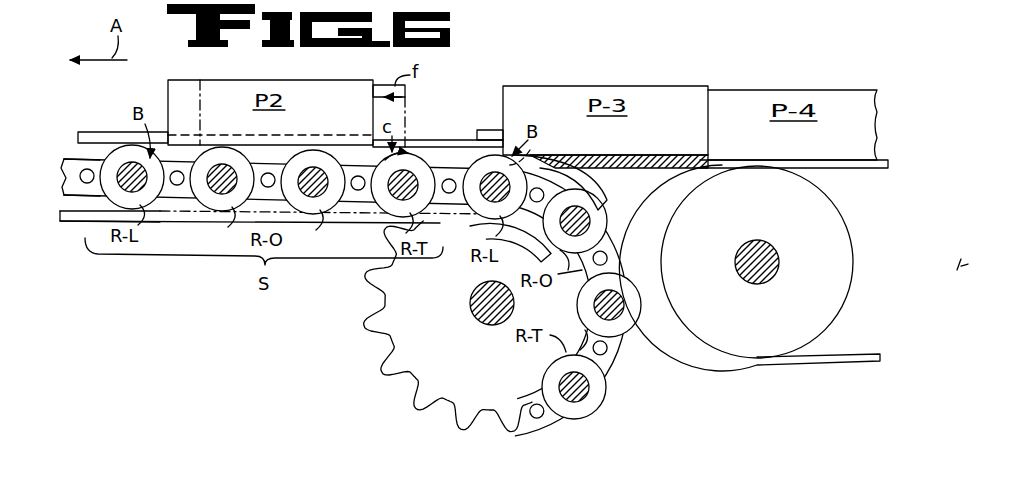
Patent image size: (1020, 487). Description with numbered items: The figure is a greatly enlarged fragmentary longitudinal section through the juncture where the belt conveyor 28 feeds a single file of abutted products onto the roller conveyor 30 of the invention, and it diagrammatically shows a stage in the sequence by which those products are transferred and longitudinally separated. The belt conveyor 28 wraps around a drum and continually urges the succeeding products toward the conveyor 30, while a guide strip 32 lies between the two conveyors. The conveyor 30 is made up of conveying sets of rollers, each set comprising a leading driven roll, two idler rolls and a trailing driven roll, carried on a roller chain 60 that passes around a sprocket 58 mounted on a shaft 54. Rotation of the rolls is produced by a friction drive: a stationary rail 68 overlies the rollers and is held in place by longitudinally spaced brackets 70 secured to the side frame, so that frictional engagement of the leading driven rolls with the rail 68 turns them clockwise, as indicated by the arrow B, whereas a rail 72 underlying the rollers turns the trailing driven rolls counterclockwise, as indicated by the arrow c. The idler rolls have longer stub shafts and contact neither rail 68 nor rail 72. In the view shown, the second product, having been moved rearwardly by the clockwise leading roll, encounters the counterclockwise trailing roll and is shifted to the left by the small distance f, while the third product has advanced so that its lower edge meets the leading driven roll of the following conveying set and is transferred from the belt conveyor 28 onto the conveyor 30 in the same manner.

The belt conveyor 28 is at (722, 370).
The conveyor 30 is at (68, 232).
The guide strip 32 is at (668, 170).
The sprocket shaft 54 is at (470, 305).
The sprocket 58 is at (388, 313).
The roller chain 60 is at (80, 165).
The stationary rail 68 is at (88, 132).
The brackets 70 is at (490, 130).
The rail 72 is at (80, 211).